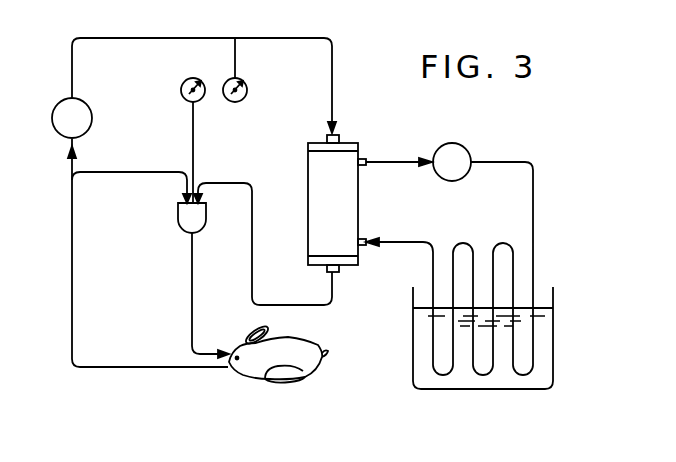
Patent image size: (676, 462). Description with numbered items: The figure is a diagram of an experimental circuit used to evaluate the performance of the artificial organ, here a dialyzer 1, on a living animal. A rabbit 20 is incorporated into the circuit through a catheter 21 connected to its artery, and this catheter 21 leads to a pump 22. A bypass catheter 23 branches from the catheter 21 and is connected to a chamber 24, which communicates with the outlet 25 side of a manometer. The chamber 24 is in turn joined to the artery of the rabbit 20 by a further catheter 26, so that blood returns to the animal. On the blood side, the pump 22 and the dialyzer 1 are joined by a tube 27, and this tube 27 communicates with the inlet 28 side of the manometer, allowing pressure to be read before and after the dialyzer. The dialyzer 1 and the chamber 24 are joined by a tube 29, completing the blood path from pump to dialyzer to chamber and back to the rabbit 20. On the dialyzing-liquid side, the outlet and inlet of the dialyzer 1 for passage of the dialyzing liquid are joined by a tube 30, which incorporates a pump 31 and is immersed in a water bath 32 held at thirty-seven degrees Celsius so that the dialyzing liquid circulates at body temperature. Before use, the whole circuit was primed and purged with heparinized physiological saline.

The dialyzer 1 is at (355, 210).
The rabbit 20 is at (283, 377).
The catheter 21 is at (122, 367).
The pump 22 is at (53, 127).
The bypass catheter 23 is at (133, 172).
The chamber 24 is at (180, 220).
The outlet side of manometer 25 is at (183, 94).
The catheter 26 is at (192, 313).
The tube 27 is at (160, 38).
The inlet side of manometer 28 is at (245, 98).
The tube 29 is at (252, 250).
The tube 30 is at (393, 163).
The pump 31 is at (456, 181).
The water bath 32 is at (472, 389).